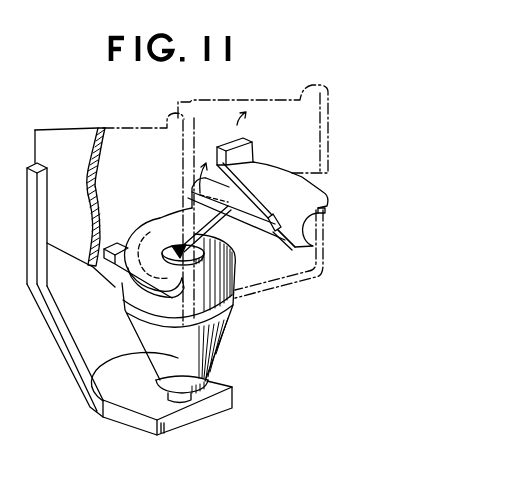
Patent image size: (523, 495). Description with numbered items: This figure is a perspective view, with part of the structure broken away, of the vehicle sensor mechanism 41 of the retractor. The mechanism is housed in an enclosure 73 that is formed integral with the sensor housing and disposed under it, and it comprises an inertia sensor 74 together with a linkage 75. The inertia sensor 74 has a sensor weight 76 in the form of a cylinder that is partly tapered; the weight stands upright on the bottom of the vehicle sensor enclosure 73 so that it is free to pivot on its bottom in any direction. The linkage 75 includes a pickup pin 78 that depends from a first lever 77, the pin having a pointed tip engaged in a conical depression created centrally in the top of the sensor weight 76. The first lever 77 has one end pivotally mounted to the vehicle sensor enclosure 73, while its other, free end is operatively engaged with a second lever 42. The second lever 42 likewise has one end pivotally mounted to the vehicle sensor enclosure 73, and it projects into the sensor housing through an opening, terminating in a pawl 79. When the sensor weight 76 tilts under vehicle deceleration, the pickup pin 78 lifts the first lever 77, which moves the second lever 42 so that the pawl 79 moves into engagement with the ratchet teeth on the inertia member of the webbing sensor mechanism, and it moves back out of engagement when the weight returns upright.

The vehicle sensor mechanism 41 is at (332, 223).
The second lever 42 is at (283, 181).
The vehicle sensor enclosure 73 is at (328, 116).
The inertia sensor 74 is at (208, 318).
The linkage 75 is at (175, 203).
The sensor weight 76 is at (231, 364).
The first lever 77 is at (173, 212).
The pickup pin 78 is at (226, 243).
The pawl 79 is at (247, 143).